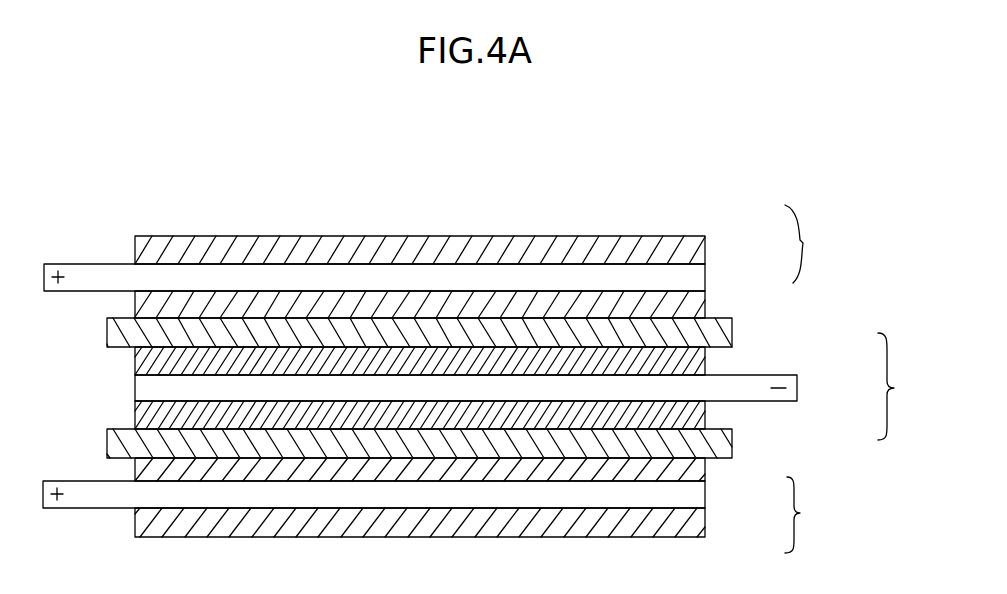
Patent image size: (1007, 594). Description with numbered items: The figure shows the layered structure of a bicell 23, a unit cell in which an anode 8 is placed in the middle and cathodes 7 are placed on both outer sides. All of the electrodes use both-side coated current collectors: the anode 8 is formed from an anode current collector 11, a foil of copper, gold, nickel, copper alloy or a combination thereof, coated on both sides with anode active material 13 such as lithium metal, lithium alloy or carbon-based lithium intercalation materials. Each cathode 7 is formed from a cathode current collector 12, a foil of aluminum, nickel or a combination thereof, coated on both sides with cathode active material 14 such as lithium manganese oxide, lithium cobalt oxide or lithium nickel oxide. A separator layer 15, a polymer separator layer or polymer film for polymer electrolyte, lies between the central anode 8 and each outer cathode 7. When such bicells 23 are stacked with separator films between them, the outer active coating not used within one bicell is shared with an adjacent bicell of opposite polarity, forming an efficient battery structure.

The cathode 7 is at (805, 379).
The anode 8 is at (895, 386).
The anode current collector 11 is at (788, 393).
The cathode current collector 12 is at (693, 277).
The anode active material 13 is at (687, 359).
The cathode active material 14 is at (693, 250).
The separator layer 15 is at (112, 333).
The bicell 23 is at (843, 305).